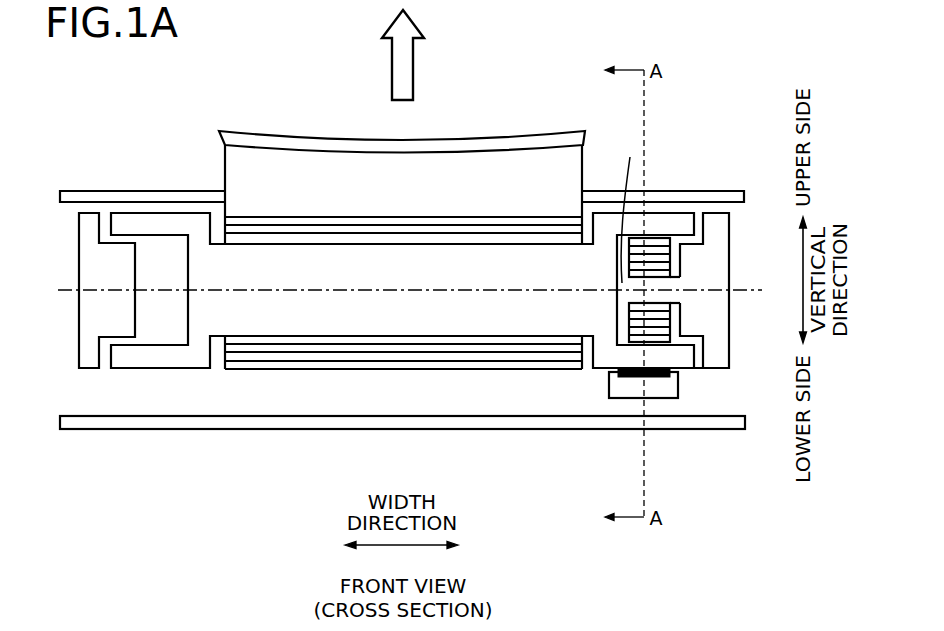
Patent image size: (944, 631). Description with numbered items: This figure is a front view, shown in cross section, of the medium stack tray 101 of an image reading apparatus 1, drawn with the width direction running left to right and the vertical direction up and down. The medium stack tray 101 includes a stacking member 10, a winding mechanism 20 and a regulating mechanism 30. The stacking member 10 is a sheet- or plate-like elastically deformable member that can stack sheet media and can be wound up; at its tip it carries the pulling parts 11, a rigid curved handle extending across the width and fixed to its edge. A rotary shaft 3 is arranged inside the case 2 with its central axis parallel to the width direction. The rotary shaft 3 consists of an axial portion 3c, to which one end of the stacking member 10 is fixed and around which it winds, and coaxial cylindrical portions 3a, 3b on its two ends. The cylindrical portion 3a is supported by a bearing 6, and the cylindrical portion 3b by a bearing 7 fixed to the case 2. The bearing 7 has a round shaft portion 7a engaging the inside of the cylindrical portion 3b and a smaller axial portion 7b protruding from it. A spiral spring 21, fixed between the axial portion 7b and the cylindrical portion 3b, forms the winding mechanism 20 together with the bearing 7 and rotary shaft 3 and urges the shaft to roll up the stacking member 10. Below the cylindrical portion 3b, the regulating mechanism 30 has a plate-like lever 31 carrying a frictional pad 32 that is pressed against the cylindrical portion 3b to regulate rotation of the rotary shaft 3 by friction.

The image reading apparatus 1 is at (102, 106).
The case 2 is at (81, 191).
The rotary shaft 3 is at (181, 204).
The cylindrical portion 3a is at (140, 213).
The cylindrical portion 3b is at (663, 222).
The axial portion 3c is at (306, 322).
The bearing 6 is at (92, 368).
The bearing 7 is at (713, 370).
The round shaft portion 7a is at (687, 370).
The axial portion 7b is at (629, 207).
The stacking member 10 is at (583, 165).
The pulling parts 11 is at (441, 130).
The winding mechanism 20 is at (703, 204).
The spiral spring 21 is at (668, 258).
The regulating mechanism 30 is at (668, 409).
The lever 31 is at (619, 398).
The frictional pad 32 is at (635, 398).
The medium stack tray 101 is at (300, 122).